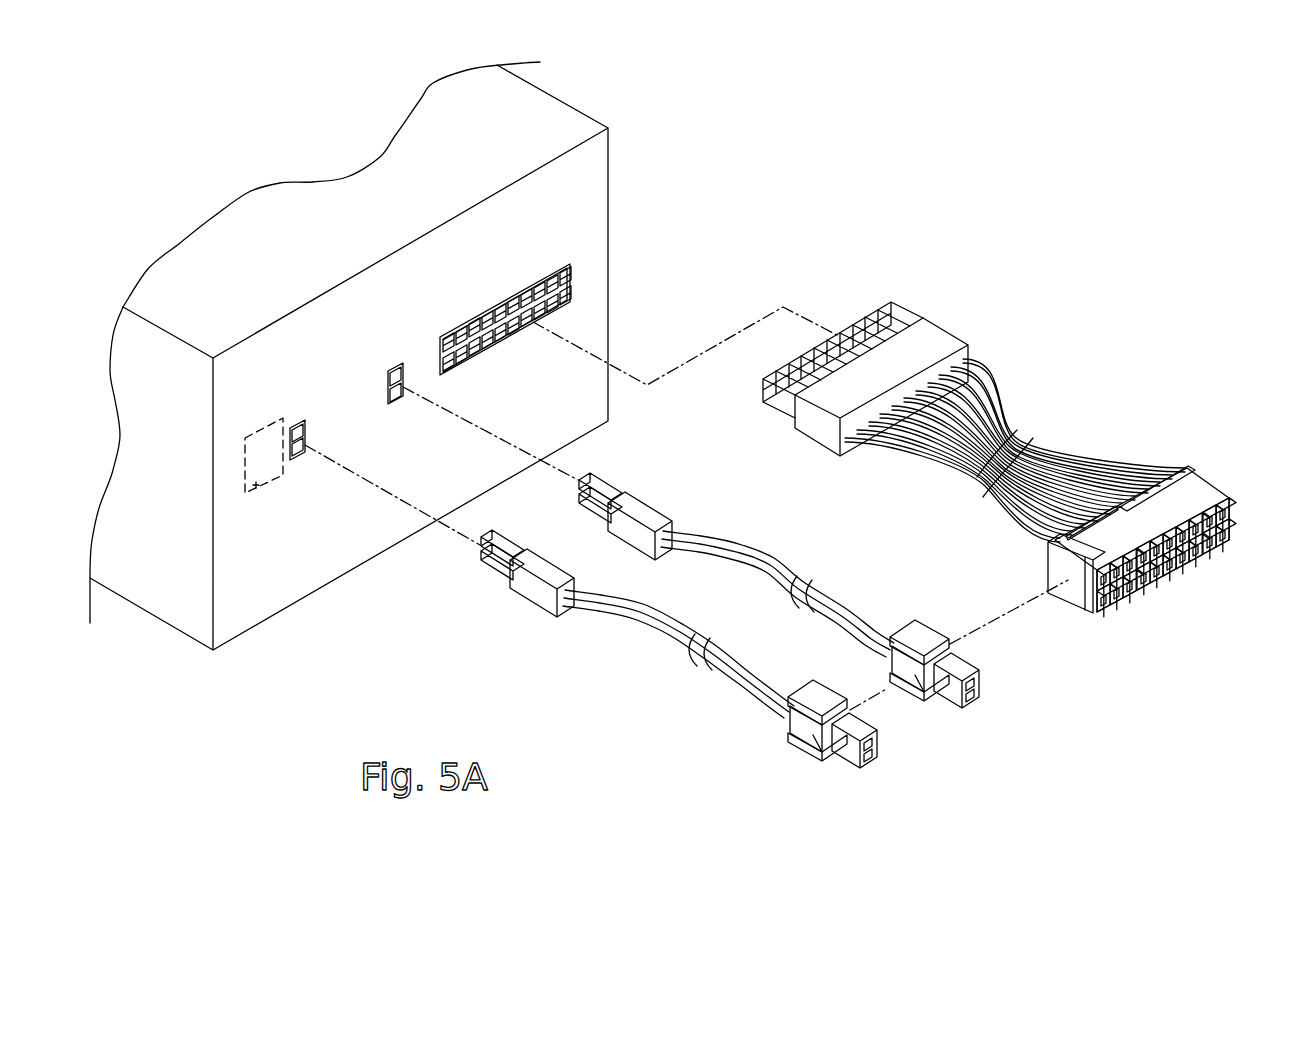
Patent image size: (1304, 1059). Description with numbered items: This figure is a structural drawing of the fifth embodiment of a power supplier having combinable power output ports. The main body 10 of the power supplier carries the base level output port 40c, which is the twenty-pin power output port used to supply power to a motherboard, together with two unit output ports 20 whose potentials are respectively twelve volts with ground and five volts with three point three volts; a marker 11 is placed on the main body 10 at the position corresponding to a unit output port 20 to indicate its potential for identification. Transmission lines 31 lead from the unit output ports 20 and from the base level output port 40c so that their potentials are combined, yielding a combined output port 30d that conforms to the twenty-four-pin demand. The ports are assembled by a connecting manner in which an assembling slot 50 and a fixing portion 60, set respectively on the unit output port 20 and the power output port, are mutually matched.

The main body 10 is at (563, 115).
The marker 11 is at (257, 490).
The base level output port 40c is at (570, 288).
The unit output port 20 is at (643, 505).
The transmission lines 31 is at (990, 400).
The assembling slot 50 is at (848, 710).
The fixing portion 60 is at (963, 664).
The combined output port 30d is at (858, 543).